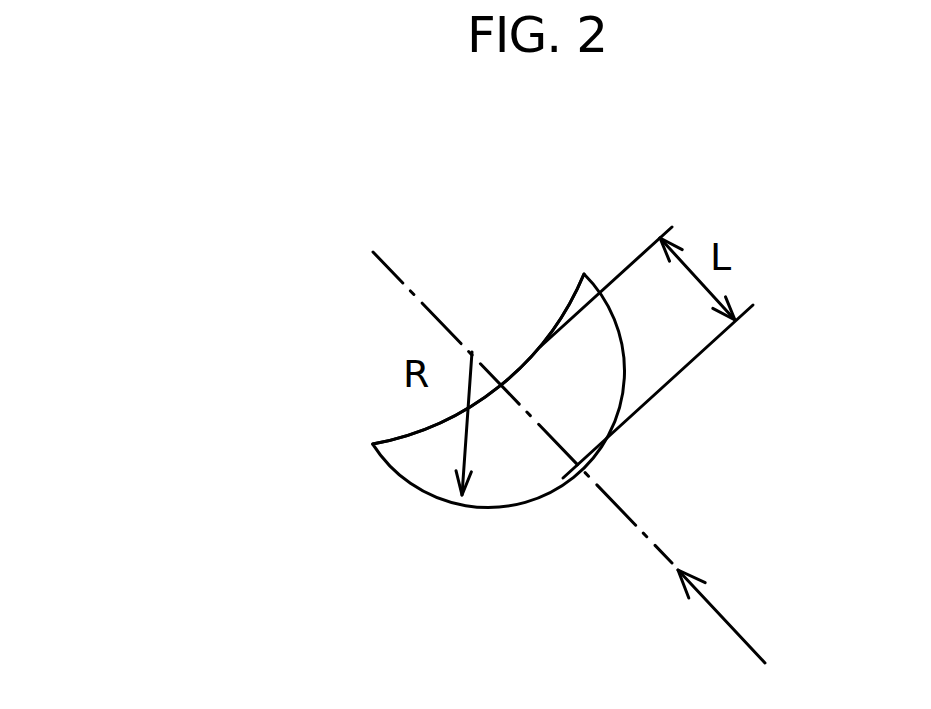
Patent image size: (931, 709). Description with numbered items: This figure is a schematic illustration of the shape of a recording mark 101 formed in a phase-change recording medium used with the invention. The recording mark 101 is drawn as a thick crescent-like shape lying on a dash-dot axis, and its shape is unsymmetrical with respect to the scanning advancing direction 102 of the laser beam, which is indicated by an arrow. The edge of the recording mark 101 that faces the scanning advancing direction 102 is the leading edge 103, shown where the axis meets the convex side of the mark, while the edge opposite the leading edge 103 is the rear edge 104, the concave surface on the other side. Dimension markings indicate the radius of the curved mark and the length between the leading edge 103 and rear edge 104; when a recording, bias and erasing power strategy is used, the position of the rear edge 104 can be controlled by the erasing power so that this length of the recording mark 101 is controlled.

The recording mark 101 is at (402, 492).
The scanning advancing direction 102 is at (735, 608).
The leading edge 103 is at (580, 474).
The rear edge 104 is at (505, 368).